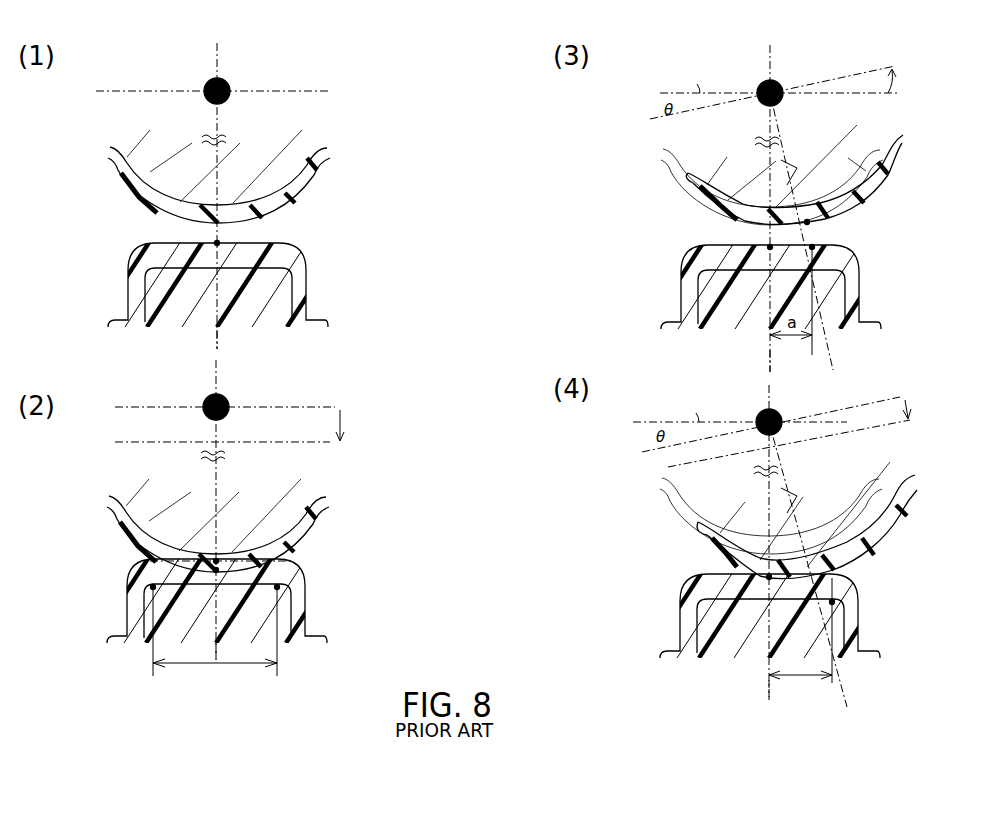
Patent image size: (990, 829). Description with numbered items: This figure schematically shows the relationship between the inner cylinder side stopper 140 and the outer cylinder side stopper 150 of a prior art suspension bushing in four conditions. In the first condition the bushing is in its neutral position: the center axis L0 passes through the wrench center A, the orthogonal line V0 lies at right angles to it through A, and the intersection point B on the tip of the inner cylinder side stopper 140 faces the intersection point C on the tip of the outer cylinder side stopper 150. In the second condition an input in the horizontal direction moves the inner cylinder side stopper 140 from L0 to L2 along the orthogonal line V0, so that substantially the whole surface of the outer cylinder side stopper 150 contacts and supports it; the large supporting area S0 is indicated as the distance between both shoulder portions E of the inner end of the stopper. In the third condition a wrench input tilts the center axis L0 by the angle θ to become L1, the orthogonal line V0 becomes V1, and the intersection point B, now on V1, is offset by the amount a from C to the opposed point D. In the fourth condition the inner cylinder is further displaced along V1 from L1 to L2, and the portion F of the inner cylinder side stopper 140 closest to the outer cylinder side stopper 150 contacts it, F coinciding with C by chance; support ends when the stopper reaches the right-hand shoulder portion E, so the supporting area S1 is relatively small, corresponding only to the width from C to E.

The inner cylinder side stopper 140 is at (122, 187).
The outer cylinder side stopper 150 is at (162, 295).
The wrench center A is at (213, 78).
The intersection point B is at (212, 224).
The intersection point C is at (220, 243).
The intersection point D is at (815, 247).
The shoulder portion E is at (152, 587).
The portion F is at (762, 577).
The center axis L0 is at (483, 249).
The tilted center axis L1 is at (758, 264).
The displaced center axis L2 is at (500, 447).
The orthogonal line V0 is at (490, 520).
The tilted orthogonal line V1 is at (811, 400).
The supporting area S0 is at (215, 638).
The supporting area S1 is at (800, 640).